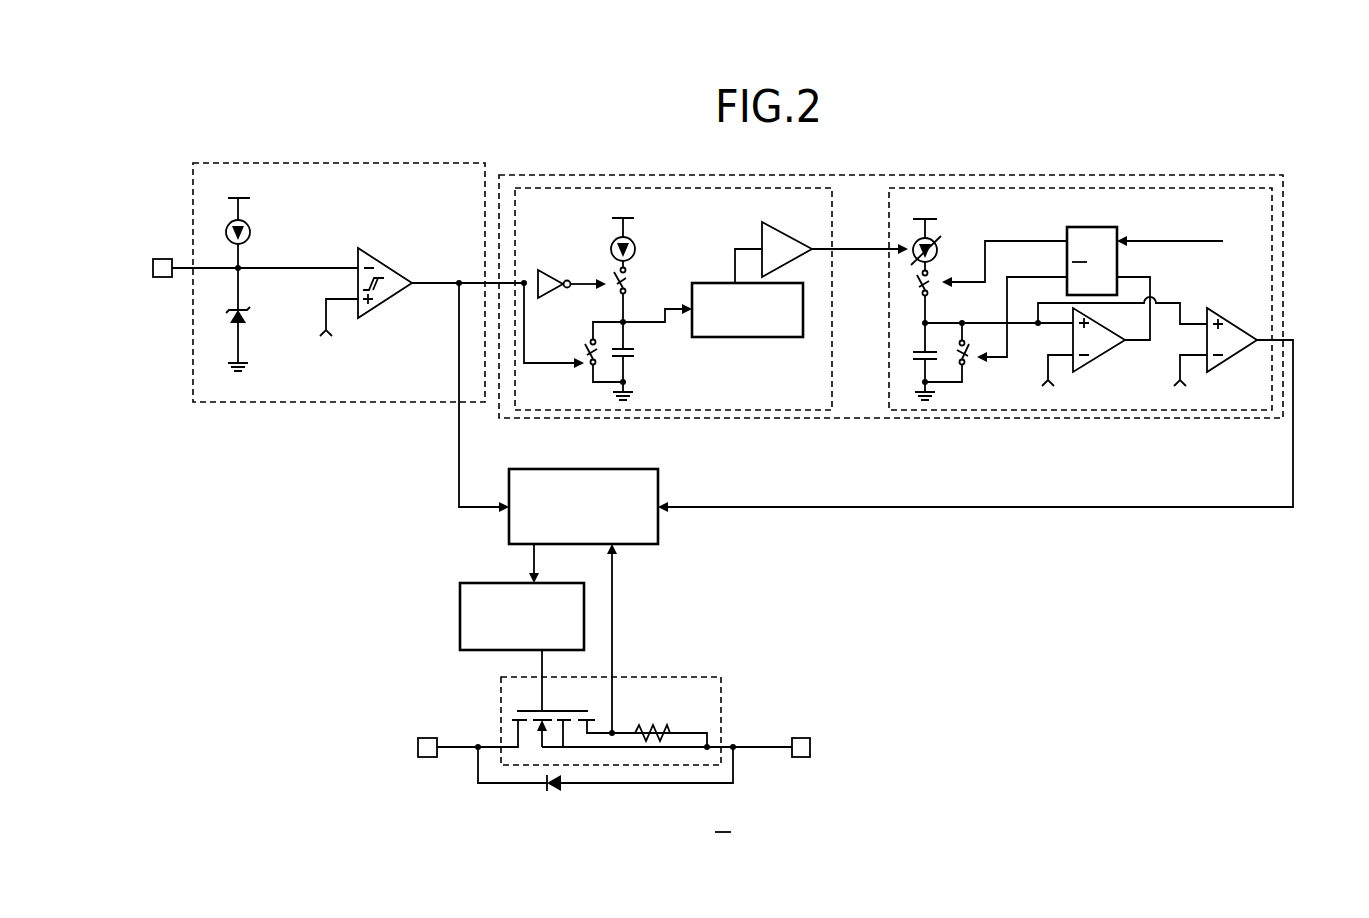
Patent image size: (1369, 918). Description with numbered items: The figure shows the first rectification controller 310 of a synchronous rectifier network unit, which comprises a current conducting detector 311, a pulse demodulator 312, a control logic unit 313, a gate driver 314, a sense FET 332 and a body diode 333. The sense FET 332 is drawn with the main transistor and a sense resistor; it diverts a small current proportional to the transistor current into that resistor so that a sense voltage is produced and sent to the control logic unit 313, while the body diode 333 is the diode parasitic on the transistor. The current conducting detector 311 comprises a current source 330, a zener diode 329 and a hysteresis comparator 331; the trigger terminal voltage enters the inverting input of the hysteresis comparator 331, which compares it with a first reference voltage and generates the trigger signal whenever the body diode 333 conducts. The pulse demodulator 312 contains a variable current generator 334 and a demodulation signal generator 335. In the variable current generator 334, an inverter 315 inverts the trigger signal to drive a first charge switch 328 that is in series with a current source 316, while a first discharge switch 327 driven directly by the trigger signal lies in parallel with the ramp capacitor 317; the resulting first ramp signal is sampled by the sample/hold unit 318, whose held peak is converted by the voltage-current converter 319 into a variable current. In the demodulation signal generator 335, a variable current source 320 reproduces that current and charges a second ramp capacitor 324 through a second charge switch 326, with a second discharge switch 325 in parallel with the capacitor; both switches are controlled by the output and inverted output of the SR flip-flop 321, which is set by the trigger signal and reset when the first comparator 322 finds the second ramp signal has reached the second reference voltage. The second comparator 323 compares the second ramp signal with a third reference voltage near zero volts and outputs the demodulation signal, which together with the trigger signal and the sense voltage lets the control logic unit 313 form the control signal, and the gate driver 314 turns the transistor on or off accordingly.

The first rectification controller 310 is at (1130, 153).
The current conducting detector 311 is at (345, 163).
The pulse demodulator 312 is at (910, 175).
The control logic unit 313 is at (614, 469).
The gate driver 314 is at (460, 615).
The inverter 315 is at (556, 271).
The current source 316 is at (636, 246).
The ramp capacitor 317 is at (636, 352).
The sample/hold unit 318 is at (757, 338).
The voltage-current converter 319 is at (788, 240).
The variable current source 320 is at (939, 243).
The SR flip-flop 321 is at (1090, 227).
The first comparator 322 is at (1095, 363).
The second comparator 323 is at (1230, 312).
The second ramp capacitor 324 is at (912, 356).
The second discharge switch 325 is at (970, 366).
The second charge switch 326 is at (916, 283).
The first discharge switch 327 is at (586, 366).
The first charge switch 328 is at (632, 280).
The zener diode 329 is at (247, 315).
The current source 330 is at (251, 231).
The hysteresis comparator 331 is at (386, 262).
The sense FET 332 is at (695, 677).
The body diode 333 is at (550, 795).
The variable current generator 334 is at (765, 410).
The demodulation signal generator 335 is at (1210, 410).